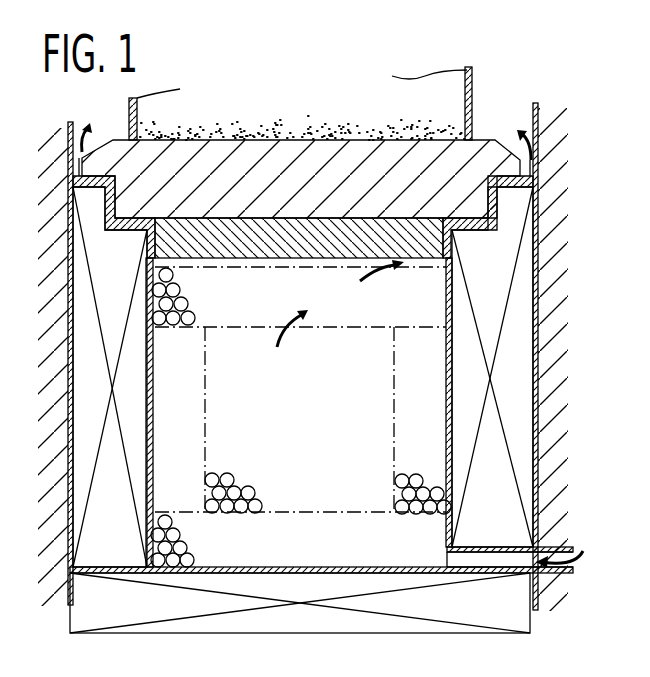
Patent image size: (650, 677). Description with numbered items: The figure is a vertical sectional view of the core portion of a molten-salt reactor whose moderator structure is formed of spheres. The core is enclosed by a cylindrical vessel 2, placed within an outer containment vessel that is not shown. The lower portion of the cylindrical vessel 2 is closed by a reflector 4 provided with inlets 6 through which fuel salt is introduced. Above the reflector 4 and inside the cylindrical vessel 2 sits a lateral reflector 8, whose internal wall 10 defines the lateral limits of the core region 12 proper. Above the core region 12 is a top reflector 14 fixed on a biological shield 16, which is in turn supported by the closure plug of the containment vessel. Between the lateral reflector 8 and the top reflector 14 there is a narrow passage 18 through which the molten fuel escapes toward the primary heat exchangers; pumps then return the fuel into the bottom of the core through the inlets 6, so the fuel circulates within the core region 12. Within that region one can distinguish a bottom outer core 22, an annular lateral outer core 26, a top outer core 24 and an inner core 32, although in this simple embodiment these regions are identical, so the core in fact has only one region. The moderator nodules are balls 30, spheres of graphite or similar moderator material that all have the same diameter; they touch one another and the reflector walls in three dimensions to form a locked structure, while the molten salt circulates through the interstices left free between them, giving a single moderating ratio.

The cylindrical vessel 2 is at (67, 473).
The reflector 4 is at (132, 603).
The inlets 6 is at (552, 573).
The lateral reflector 8 is at (497, 310).
The internal wall 10 is at (443, 390).
The core region 12 is at (287, 424).
The top reflector 14 is at (293, 240).
The biological shield 16 is at (470, 160).
The narrow passage 18 is at (500, 211).
The bottom outer core 22 is at (433, 528).
The top outer core 24 is at (190, 288).
The lateral outer core 26 is at (170, 357).
The balls 30 is at (268, 496).
The inner core 32 is at (218, 433).